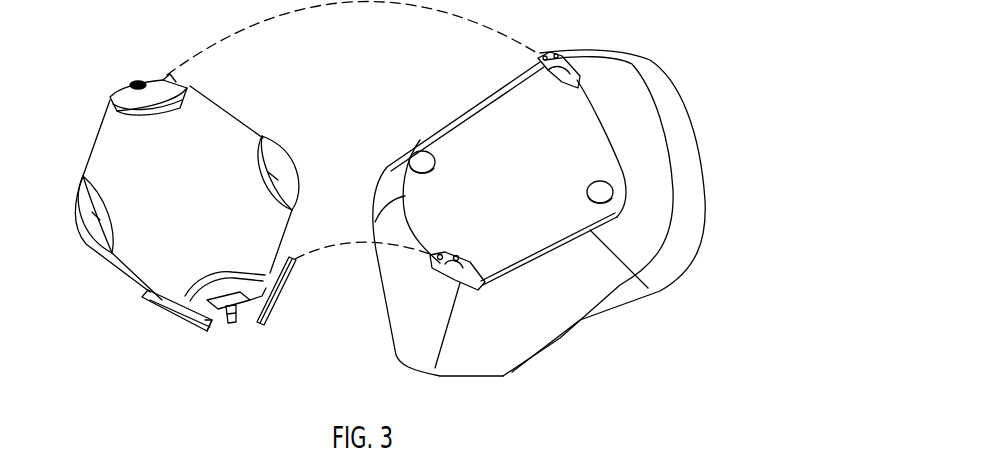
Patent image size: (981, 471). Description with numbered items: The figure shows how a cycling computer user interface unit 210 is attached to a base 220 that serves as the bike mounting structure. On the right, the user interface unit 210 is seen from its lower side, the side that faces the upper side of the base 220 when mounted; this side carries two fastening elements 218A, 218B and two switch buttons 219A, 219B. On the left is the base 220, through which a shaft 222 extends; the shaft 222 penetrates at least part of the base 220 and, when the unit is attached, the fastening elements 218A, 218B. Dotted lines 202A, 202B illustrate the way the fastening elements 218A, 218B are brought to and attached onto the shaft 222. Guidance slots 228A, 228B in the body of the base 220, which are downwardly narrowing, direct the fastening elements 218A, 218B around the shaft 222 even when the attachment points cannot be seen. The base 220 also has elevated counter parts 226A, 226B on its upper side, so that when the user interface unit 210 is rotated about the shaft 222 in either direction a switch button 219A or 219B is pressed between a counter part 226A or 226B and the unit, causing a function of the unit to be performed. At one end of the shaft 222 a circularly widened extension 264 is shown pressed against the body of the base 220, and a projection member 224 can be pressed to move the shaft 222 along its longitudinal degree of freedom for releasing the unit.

The cycling computer user interface unit 210 is at (627, 307).
The fastening element 218A is at (563, 80).
The fastening element 218B is at (477, 263).
The switch button 219A is at (467, 143).
The switch button 219B is at (593, 178).
The base 220 is at (213, 101).
The shaft 222 is at (235, 325).
The projection member 224 is at (183, 332).
The elevated counter part 226A is at (292, 150).
The elevated counter part 226B is at (77, 230).
The guidance slot 228A is at (127, 88).
The guidance slot 228B is at (208, 290).
The circularly widened extension 264 is at (137, 82).
The dotted line 202A is at (340, 3).
The dotted line 202B is at (355, 243).